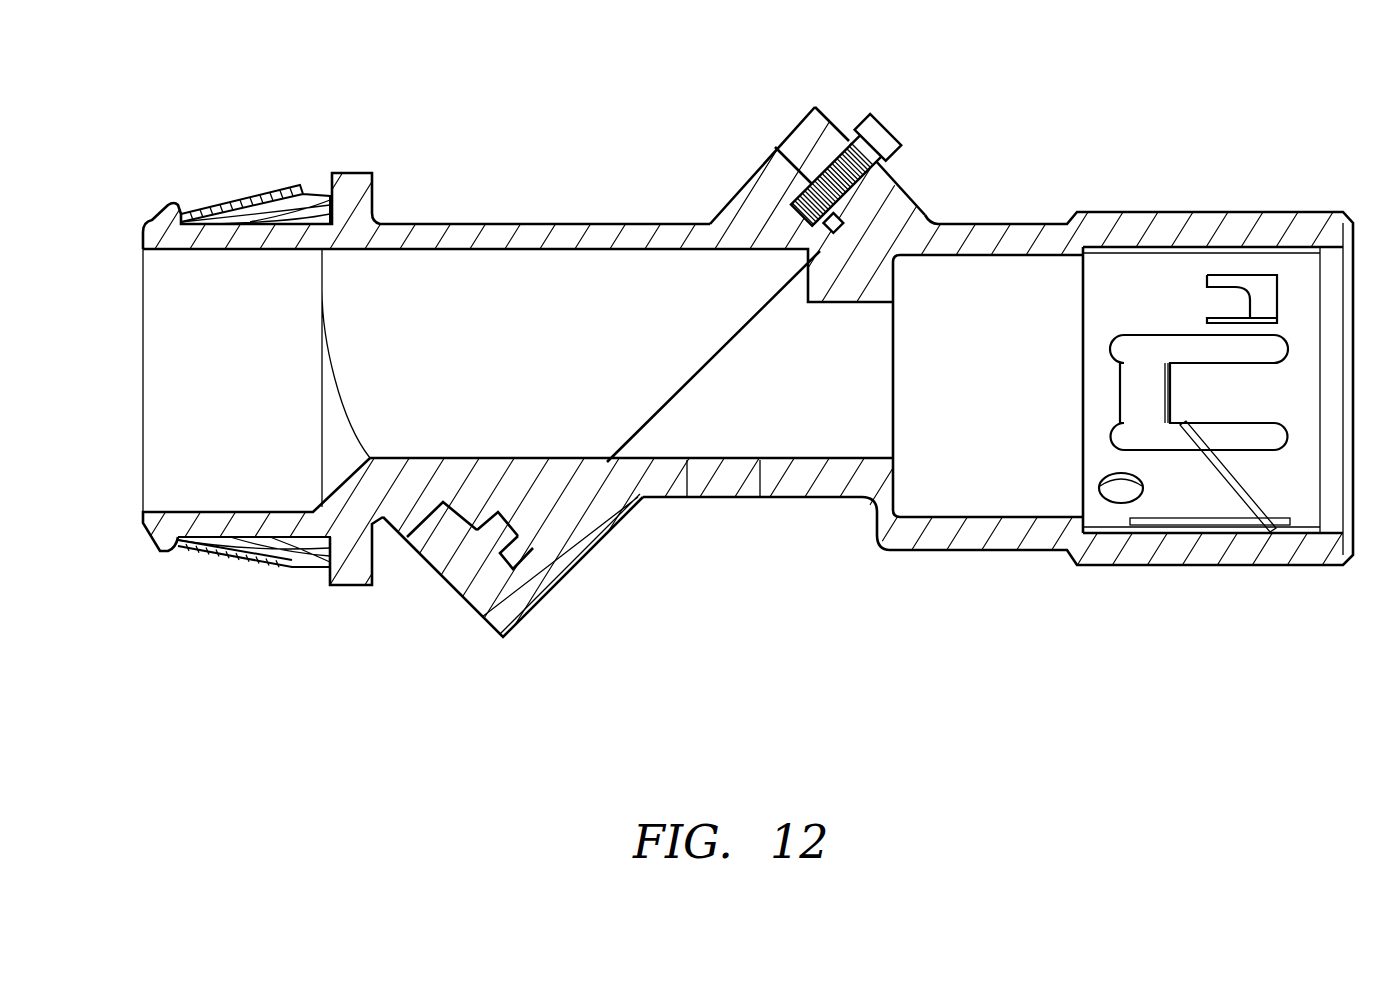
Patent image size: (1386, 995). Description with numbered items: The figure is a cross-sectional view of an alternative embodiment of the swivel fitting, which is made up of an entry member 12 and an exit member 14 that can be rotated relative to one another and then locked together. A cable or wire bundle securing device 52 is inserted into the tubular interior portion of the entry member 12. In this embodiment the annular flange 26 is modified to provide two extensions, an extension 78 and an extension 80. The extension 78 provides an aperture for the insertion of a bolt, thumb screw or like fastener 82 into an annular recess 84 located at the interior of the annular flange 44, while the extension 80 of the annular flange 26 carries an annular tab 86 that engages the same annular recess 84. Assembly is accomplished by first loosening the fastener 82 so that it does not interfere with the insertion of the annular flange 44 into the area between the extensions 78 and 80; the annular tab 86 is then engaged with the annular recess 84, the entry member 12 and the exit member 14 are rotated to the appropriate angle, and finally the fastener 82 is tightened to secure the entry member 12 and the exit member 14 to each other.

The entry member 12 is at (1152, 188).
The exit member 14 is at (527, 192).
The annular flange 26 is at (873, 187).
The annular flange 44 is at (753, 193).
The cable or wire bundle securing device 52 is at (277, 190).
The extension 78 is at (818, 123).
The extension 80 is at (447, 567).
The fastener 82 is at (878, 137).
The annular recess 84 is at (840, 237).
The annular tab 86 is at (497, 530).